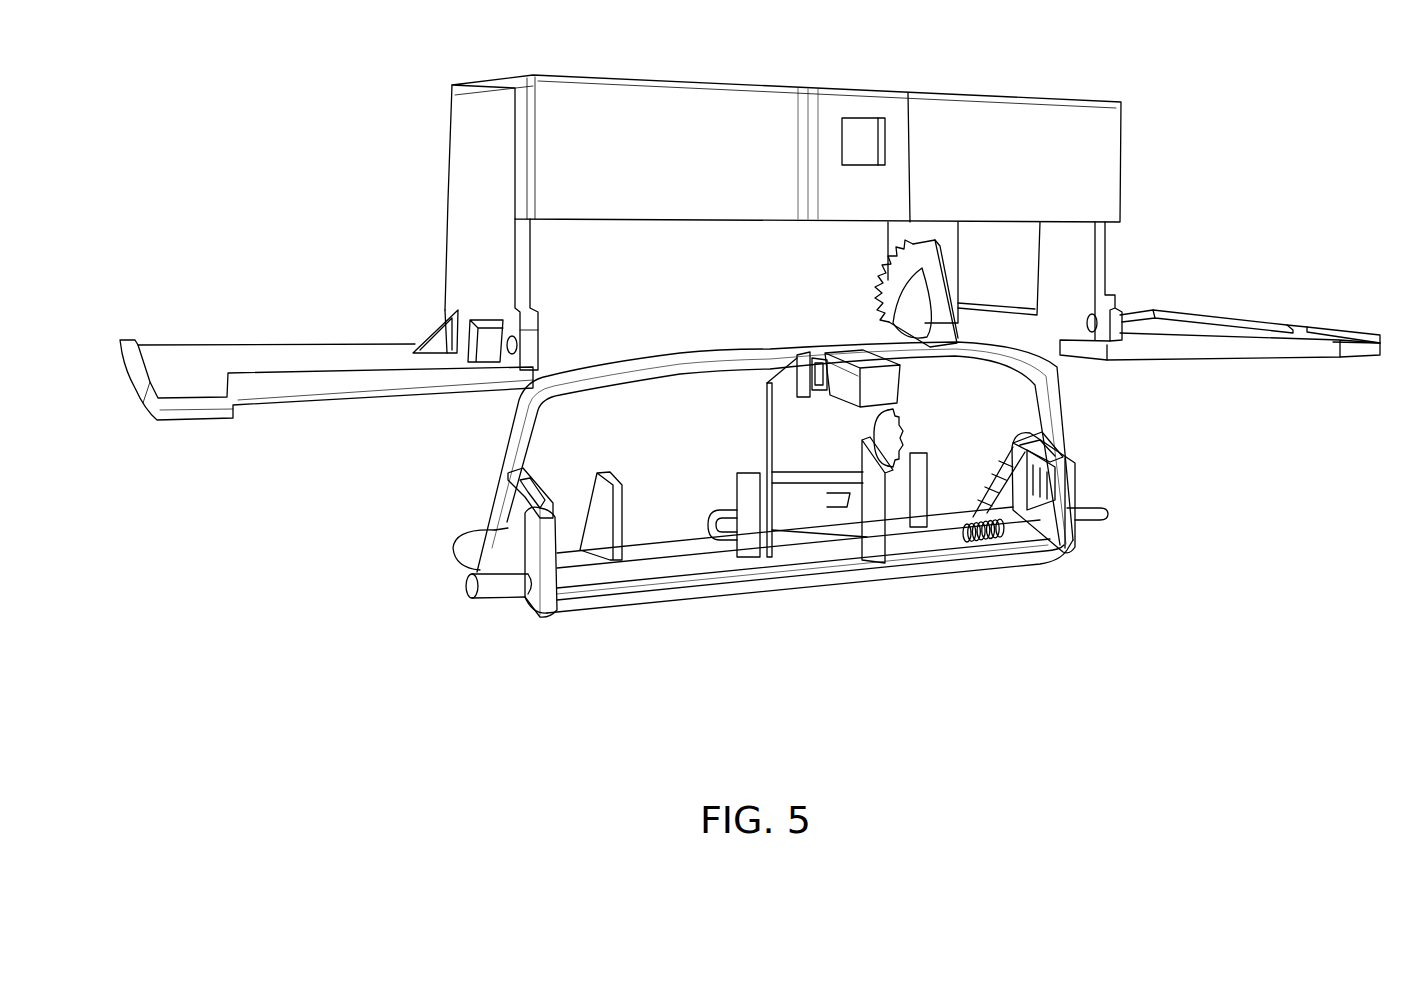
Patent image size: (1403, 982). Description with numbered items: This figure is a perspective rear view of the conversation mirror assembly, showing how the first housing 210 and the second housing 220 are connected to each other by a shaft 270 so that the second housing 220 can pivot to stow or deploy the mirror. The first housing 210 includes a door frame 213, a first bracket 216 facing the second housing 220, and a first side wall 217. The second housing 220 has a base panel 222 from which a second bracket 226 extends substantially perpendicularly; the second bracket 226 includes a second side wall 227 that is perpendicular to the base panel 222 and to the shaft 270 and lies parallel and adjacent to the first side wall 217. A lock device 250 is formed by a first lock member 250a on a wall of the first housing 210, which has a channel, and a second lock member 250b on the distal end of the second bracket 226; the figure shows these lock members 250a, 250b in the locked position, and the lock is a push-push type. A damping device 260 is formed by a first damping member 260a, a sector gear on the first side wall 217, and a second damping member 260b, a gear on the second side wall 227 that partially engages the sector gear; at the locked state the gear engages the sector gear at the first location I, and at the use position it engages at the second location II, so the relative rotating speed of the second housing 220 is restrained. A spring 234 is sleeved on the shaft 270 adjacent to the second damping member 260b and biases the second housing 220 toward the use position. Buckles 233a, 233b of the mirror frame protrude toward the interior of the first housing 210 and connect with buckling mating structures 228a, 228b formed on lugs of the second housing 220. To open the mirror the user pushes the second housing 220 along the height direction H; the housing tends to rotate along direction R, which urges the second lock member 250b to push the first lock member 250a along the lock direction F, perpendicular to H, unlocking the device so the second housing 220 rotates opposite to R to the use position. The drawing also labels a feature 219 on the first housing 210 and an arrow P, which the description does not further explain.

The first housing 210 is at (1131, 112).
The door frame 213 is at (690, 115).
The first bracket 216 is at (1020, 283).
The first side wall 217 is at (897, 230).
The window opening 219 is at (855, 140).
The second housing 220 is at (942, 587).
The base panel 222 is at (631, 597).
The second bracket 226 is at (762, 475).
The second side wall 227 is at (862, 515).
The buckling mating structure 228a is at (1020, 520).
The buckling mating structure 228b is at (550, 497).
The buckle 233a is at (1045, 455).
The buckle 233b is at (520, 482).
The spring 234 is at (975, 540).
The lock device 250 is at (911, 385).
The first lock member 250a is at (850, 385).
The second lock member 250b is at (797, 375).
The damping device 260 is at (925, 450).
The first damping member 260a is at (940, 270).
The second damping member 260b is at (914, 440).
The shaft 270 is at (480, 590).
The lock direction F is at (787, 331).
The height direction H is at (1170, 515).
The pivot direction P is at (458, 611).
The direction R is at (1167, 383).
The first location I is at (873, 312).
The second location II is at (900, 255).